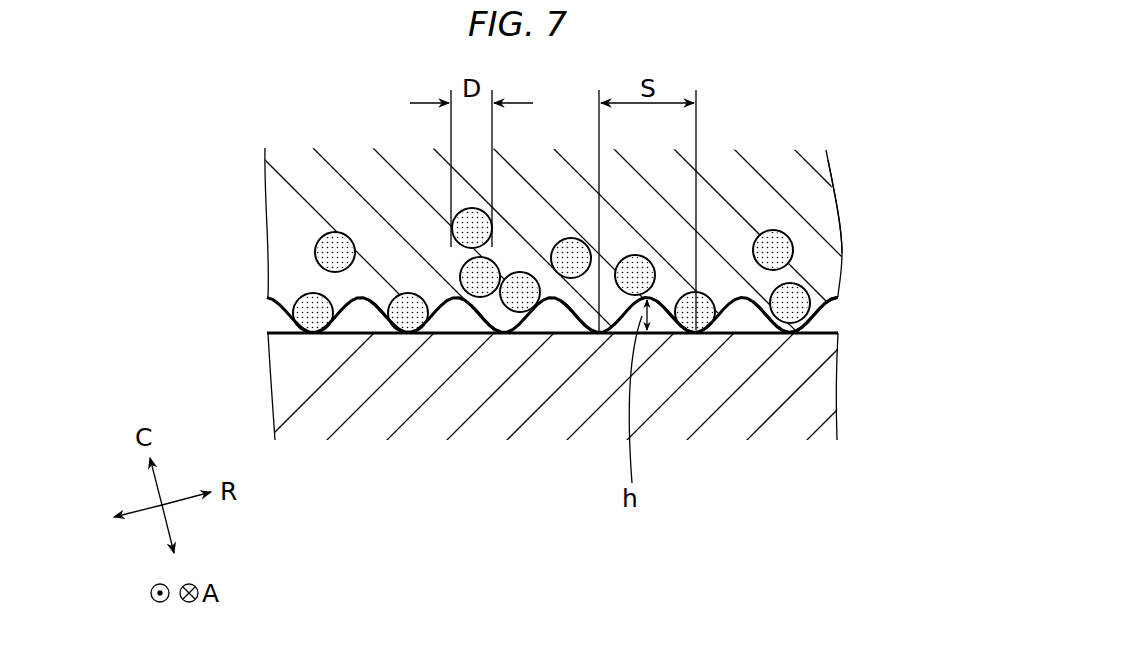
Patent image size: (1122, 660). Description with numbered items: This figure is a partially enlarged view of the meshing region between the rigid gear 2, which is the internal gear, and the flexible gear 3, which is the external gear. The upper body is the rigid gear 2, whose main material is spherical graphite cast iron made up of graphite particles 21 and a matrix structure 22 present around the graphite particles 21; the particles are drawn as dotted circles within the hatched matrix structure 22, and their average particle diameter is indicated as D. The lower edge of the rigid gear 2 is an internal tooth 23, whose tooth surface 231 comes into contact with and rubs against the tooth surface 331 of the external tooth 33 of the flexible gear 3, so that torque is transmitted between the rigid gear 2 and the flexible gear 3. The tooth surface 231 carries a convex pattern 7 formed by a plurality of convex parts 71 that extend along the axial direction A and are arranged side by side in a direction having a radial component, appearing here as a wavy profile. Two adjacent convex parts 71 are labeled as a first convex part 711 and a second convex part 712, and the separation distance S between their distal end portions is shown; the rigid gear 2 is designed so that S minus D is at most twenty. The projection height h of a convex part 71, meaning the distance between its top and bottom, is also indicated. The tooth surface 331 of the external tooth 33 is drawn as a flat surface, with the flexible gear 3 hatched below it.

The rigid gear 2 is at (857, 178).
The graphite particles 21 is at (335, 245).
The matrix structure 22 is at (363, 212).
The internal teeth 23 is at (845, 228).
The tooth surface 231 is at (834, 305).
The flexible gear 3 is at (857, 420).
The external tooth 33 is at (841, 372).
The tooth surface 331 is at (826, 320).
The convex pattern 7 is at (266, 313).
The convex parts 71 is at (380, 322).
The first convex part 711 is at (574, 318).
The second convex part 712 is at (671, 318).